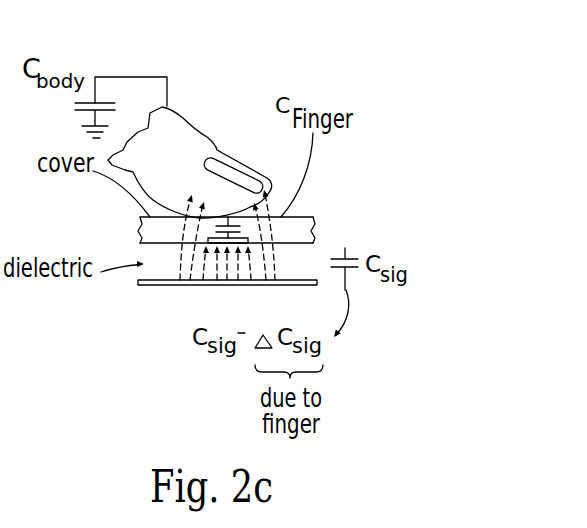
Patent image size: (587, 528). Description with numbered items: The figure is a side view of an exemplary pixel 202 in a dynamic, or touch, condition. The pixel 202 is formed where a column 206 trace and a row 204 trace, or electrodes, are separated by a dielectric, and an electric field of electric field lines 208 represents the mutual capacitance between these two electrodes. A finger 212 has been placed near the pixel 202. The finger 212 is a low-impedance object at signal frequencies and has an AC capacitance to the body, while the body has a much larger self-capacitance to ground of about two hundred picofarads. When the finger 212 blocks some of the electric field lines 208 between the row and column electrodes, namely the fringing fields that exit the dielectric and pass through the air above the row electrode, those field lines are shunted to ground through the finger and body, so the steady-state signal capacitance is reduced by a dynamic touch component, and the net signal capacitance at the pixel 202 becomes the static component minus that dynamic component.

The pixel 202 is at (170, 318).
The row trace 204 is at (155, 286).
The column trace 206 is at (210, 241).
The electric field lines 208 is at (278, 260).
The finger 212 is at (197, 131).